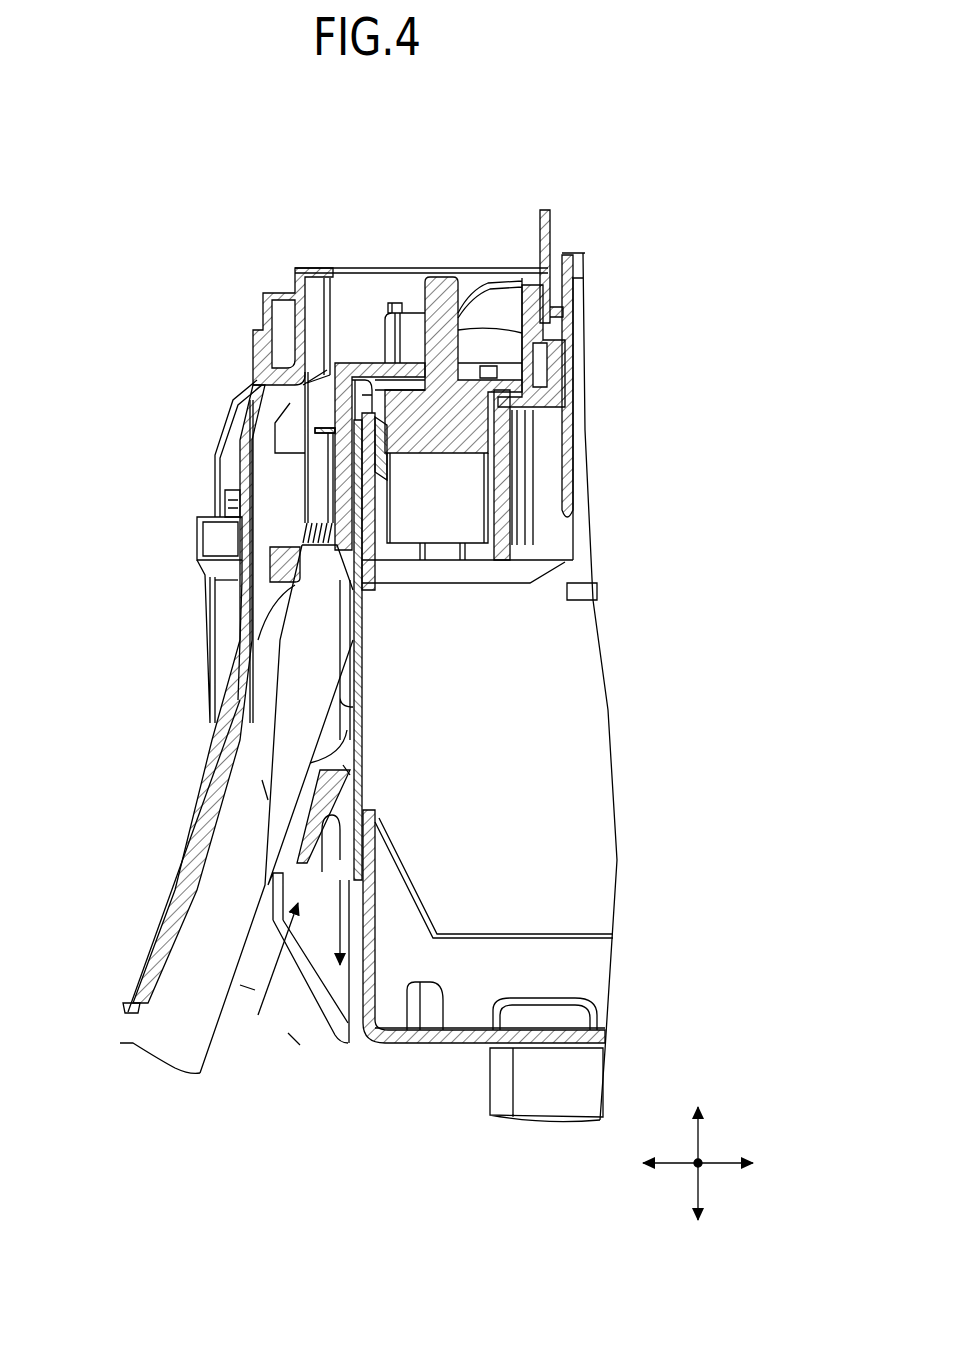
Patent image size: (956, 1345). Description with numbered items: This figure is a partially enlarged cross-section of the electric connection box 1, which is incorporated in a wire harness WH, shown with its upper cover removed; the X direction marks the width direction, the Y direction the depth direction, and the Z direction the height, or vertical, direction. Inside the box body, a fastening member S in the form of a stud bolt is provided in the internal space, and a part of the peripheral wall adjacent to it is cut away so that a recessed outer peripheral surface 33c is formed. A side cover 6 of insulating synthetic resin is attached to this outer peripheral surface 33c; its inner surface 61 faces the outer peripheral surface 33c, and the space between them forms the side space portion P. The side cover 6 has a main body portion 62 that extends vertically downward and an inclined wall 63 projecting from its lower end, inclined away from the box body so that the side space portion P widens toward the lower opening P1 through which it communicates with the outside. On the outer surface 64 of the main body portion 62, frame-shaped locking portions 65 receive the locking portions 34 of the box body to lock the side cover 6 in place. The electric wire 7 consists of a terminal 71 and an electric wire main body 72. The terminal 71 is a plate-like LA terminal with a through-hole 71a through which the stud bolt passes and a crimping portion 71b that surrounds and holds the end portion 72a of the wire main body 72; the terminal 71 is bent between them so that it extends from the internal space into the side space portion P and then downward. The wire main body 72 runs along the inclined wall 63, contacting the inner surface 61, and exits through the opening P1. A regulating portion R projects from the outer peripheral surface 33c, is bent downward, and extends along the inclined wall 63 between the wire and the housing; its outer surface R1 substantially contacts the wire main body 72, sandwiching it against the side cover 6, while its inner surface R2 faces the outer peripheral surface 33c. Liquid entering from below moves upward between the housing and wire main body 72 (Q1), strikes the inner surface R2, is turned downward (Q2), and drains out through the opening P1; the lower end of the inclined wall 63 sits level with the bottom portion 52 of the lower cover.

The electric connection box 1 is at (227, 157).
The fastening member S is at (450, 270).
The wire harness WH is at (657, 213).
The side cover 6 is at (250, 355).
The main body portion 62 is at (247, 472).
The locking portion 34 is at (233, 497).
The locking portion 65 is at (207, 533).
The inner surface 61 is at (228, 580).
The outer surface 64 is at (226, 608).
The terminal 71 is at (363, 358).
The through-hole 71a is at (405, 378).
The crimping portion 71b is at (293, 590).
The electric wire main body 72 is at (193, 930).
The end portion 72a is at (325, 585).
The electric wire 7 is at (265, 753).
The inclined wall 63 is at (203, 802).
The outer peripheral surface 33c is at (360, 725).
The regulating portion R is at (345, 772).
The outer surface R1 is at (305, 813).
The inner surface R2 is at (310, 812).
The bottom portion 52 is at (463, 1050).
The side space portion P is at (252, 988).
The opening P1 is at (300, 1032).
The upward liquid movement Q1 is at (271, 998).
The downward liquid movement Q2 is at (343, 928).
The X direction X is at (727, 1163).
The Y direction Y is at (698, 1178).
The Z direction Z is at (698, 1140).